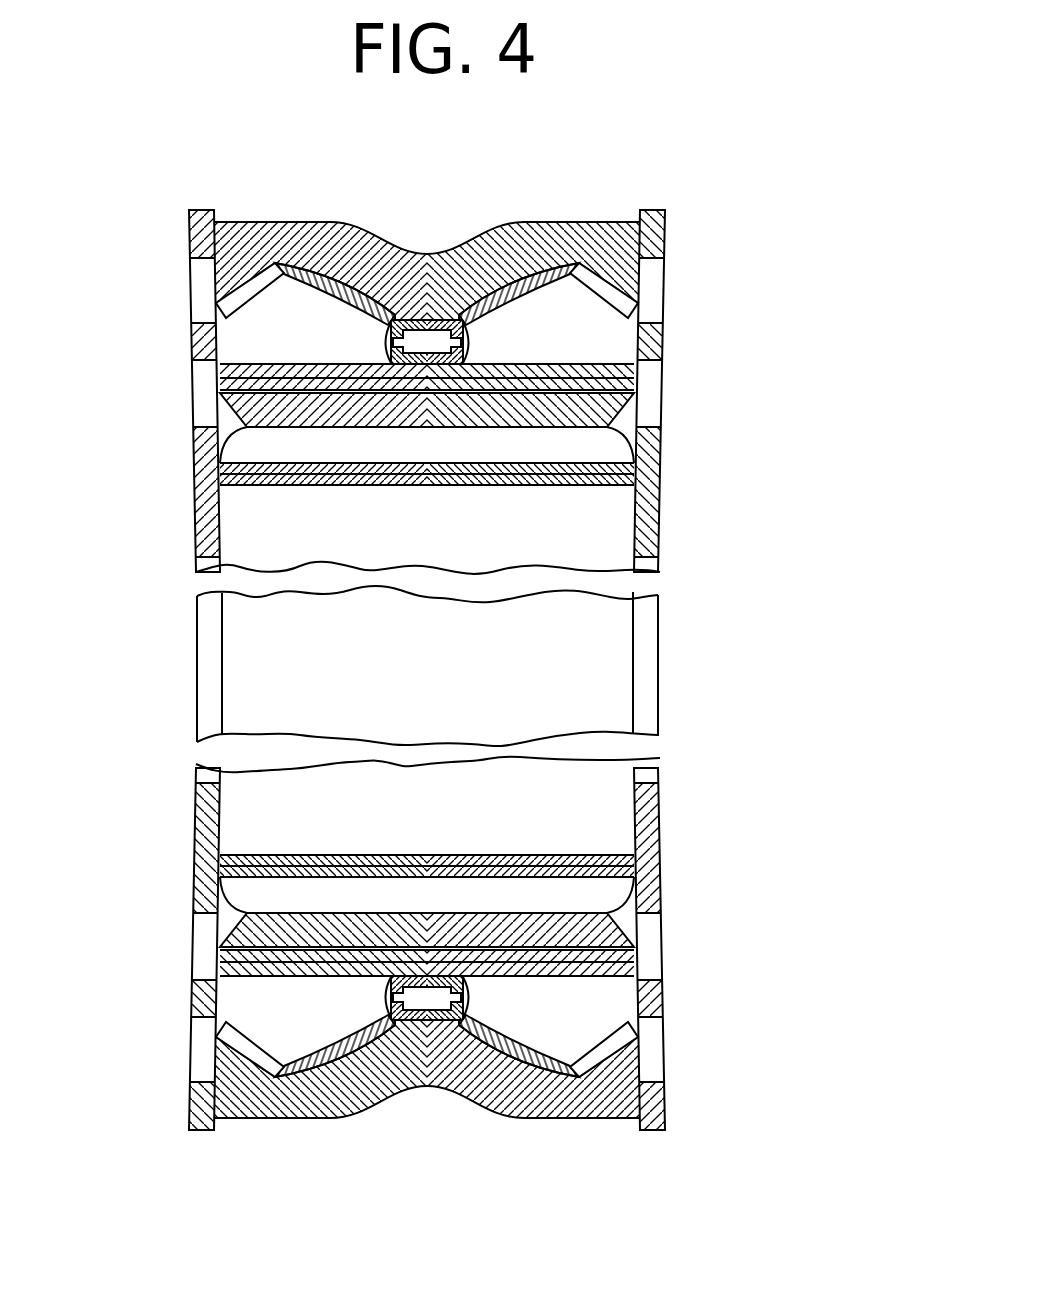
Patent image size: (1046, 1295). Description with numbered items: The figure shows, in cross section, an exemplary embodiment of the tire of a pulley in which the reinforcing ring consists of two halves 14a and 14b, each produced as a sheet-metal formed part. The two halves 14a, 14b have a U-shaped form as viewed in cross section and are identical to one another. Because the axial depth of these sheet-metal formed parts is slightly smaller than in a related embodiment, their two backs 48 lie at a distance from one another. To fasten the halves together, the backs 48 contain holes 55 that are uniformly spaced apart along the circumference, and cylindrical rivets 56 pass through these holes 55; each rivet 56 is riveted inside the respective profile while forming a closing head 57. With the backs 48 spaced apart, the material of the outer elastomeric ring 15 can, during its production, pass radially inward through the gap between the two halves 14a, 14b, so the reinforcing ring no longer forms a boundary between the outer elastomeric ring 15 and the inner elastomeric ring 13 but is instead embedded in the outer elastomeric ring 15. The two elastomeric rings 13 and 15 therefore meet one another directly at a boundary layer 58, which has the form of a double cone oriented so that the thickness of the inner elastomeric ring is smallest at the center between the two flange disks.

The outer elastomeric ring 15 is at (250, 207).
The holes 55 is at (367, 262).
The backs 48 is at (420, 318).
The first half of reinforcing ring 14a is at (245, 348).
The second half of reinforcing ring 14b is at (590, 337).
The boundary layer 58 is at (645, 402).
The cylindrical rivets 56 is at (407, 355).
The closing head 57 is at (482, 352).
The inner elastomeric ring 13 is at (563, 857).